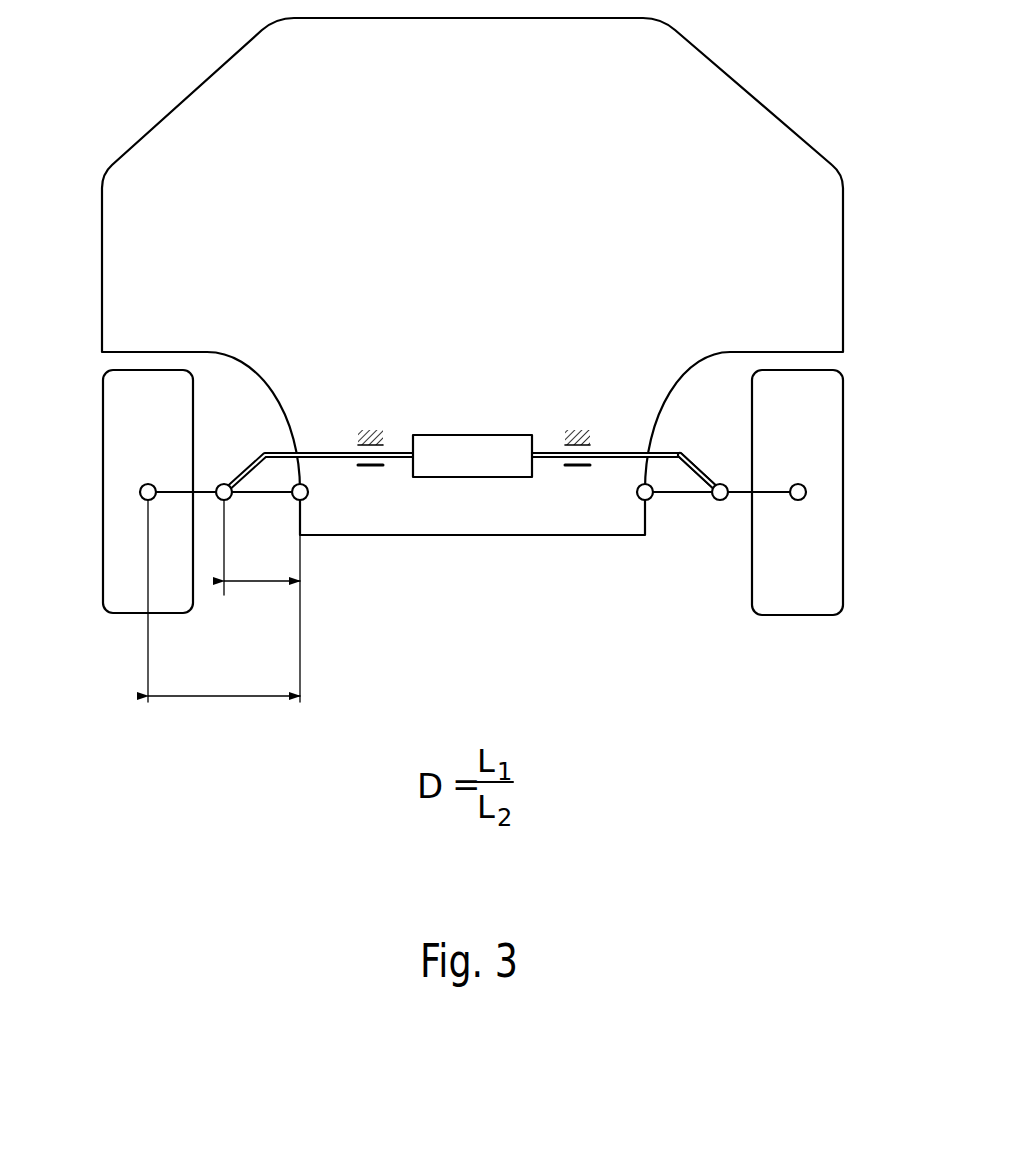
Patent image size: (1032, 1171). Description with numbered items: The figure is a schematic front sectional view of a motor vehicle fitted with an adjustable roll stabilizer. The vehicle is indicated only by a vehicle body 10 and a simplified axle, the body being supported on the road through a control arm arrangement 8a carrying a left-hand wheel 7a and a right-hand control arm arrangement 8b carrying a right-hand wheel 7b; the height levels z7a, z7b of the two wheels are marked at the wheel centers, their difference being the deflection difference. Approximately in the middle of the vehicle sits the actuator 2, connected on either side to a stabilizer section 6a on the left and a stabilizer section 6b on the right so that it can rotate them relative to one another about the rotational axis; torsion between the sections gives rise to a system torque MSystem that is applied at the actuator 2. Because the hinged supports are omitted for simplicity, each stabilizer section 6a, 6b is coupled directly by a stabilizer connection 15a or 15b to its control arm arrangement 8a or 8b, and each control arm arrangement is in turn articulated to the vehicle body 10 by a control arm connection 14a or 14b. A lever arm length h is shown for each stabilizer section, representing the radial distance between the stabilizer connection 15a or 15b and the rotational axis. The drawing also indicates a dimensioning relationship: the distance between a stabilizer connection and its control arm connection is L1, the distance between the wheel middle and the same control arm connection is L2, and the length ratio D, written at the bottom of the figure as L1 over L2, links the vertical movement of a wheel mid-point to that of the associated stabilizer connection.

The vehicle body 10 is at (553, 128).
The actuator 2 is at (476, 448).
The stabilizer section 6a is at (672, 452).
The stabilizer section 6b is at (282, 452).
The left-hand wheel 7a is at (815, 553).
The right-hand wheel 7b is at (132, 553).
The height level of the left wheel z7a is at (798, 484).
The height level of the right wheel z7b is at (148, 484).
The control arm arrangement 8a is at (672, 502).
The control arm arrangement 8b is at (247, 502).
The control arm connection 14a is at (636, 503).
The control arm connection 14b is at (310, 503).
The stabilizer connection 15a is at (720, 500).
The stabilizer connection 15b is at (224, 500).
The lever arm length h is at (256, 447).
The distance L1 is at (257, 585).
The distance L2 is at (225, 700).
The system torque MSystem is at (437, 435).